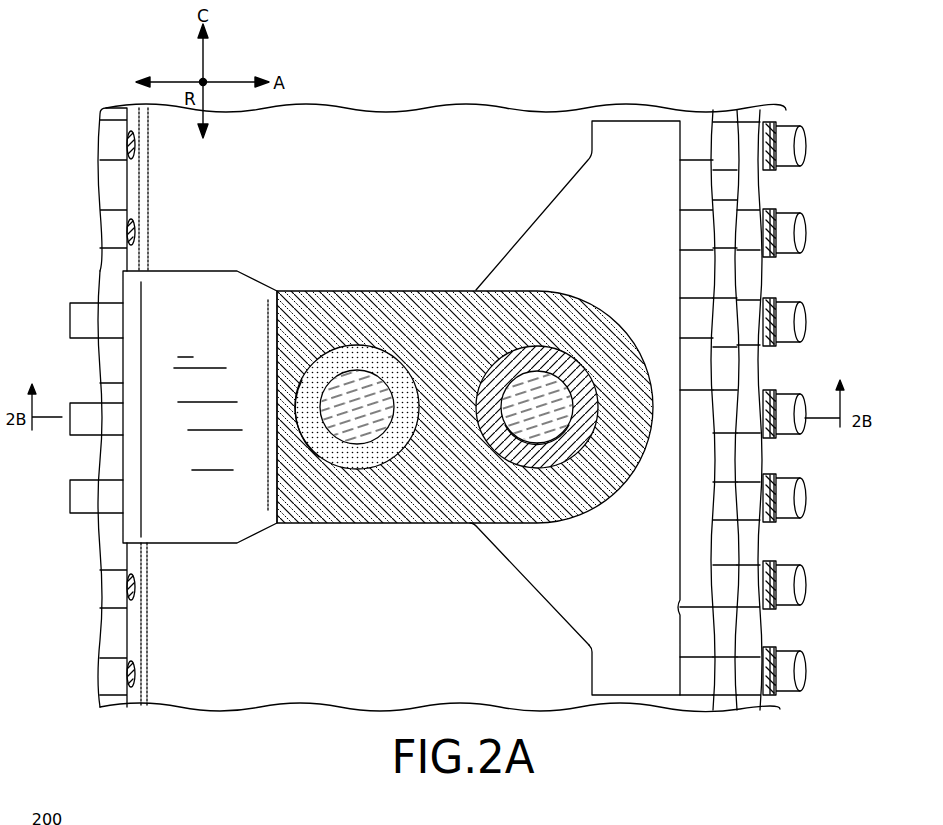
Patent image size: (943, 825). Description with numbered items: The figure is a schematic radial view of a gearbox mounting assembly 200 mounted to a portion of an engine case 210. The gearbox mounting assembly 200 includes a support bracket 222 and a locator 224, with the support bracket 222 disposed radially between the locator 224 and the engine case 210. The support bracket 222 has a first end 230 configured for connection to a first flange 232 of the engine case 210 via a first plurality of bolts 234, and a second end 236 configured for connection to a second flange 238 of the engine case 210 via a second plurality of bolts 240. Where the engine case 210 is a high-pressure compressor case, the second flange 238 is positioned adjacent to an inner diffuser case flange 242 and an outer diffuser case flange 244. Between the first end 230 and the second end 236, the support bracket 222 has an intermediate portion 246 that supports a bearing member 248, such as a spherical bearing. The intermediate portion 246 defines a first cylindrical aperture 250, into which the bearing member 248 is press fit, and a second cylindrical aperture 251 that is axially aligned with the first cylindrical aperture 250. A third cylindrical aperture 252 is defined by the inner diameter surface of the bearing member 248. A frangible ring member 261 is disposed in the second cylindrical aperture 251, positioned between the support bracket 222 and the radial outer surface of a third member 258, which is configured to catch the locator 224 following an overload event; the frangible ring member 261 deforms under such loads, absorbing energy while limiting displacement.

The gearbox mounting assembly 200 is at (322, 257).
The engine case 210 is at (413, 168).
The support bracket 222 is at (230, 513).
The locator 224 is at (550, 383).
The first end 230 is at (122, 312).
The first flange 232 is at (100, 580).
The first plurality of bolts 234 is at (80, 423).
The second end 236 is at (637, 618).
The second flange 238 is at (698, 673).
The second plurality of bolts 240 is at (787, 423).
The inner diffuser case flange 242 is at (728, 683).
The outer diffuser case flange 244 is at (757, 683).
The intermediate portion 246 is at (465, 441).
The bearing member 248 is at (502, 372).
The first cylindrical aperture 250 is at (480, 425).
The second cylindrical aperture 251 is at (320, 453).
The third cylindrical aperture 252 is at (543, 442).
The third member 258 is at (367, 383).
The frangible ring member 261 is at (358, 353).